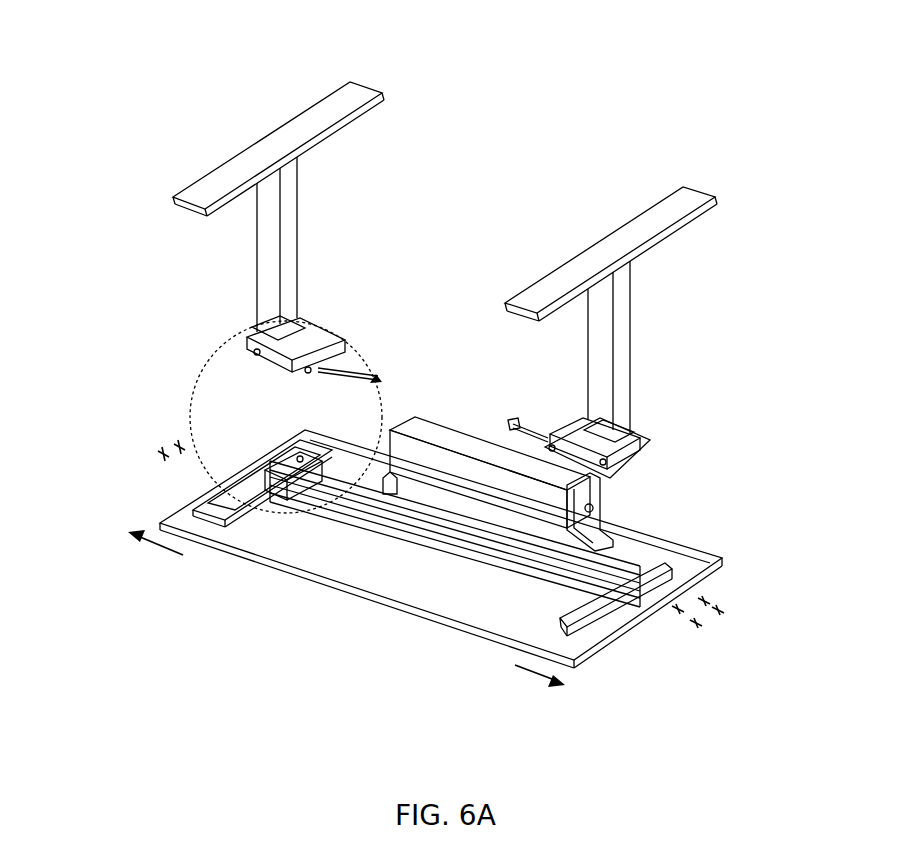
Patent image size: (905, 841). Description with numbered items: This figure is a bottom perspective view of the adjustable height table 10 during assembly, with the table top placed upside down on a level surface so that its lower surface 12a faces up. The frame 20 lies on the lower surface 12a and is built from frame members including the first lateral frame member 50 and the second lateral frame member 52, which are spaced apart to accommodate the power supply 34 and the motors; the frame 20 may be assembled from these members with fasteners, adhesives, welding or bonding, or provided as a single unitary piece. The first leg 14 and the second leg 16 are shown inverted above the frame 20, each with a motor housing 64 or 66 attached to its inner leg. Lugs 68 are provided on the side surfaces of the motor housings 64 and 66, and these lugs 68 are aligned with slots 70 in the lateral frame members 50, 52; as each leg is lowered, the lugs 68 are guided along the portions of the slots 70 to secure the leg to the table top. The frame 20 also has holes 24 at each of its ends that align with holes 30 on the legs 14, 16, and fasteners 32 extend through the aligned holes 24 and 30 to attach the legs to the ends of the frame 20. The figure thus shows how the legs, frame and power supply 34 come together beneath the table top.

The table 10 is at (692, 102).
The lower surface 12a is at (433, 578).
The first leg 14 is at (265, 251).
The second leg 16 is at (628, 365).
The frame 20 is at (340, 531).
The holes 24 is at (638, 587).
The holes 30 is at (623, 462).
The fasteners 32 is at (713, 608).
The power supply 34 is at (428, 525).
The first lateral frame member 50 is at (543, 582).
The second lateral frame member 52 is at (307, 465).
The motor housing 64 is at (303, 342).
The motor housing 66 is at (572, 418).
The lugs 68 is at (765, 525).
The slots 70 is at (310, 500).